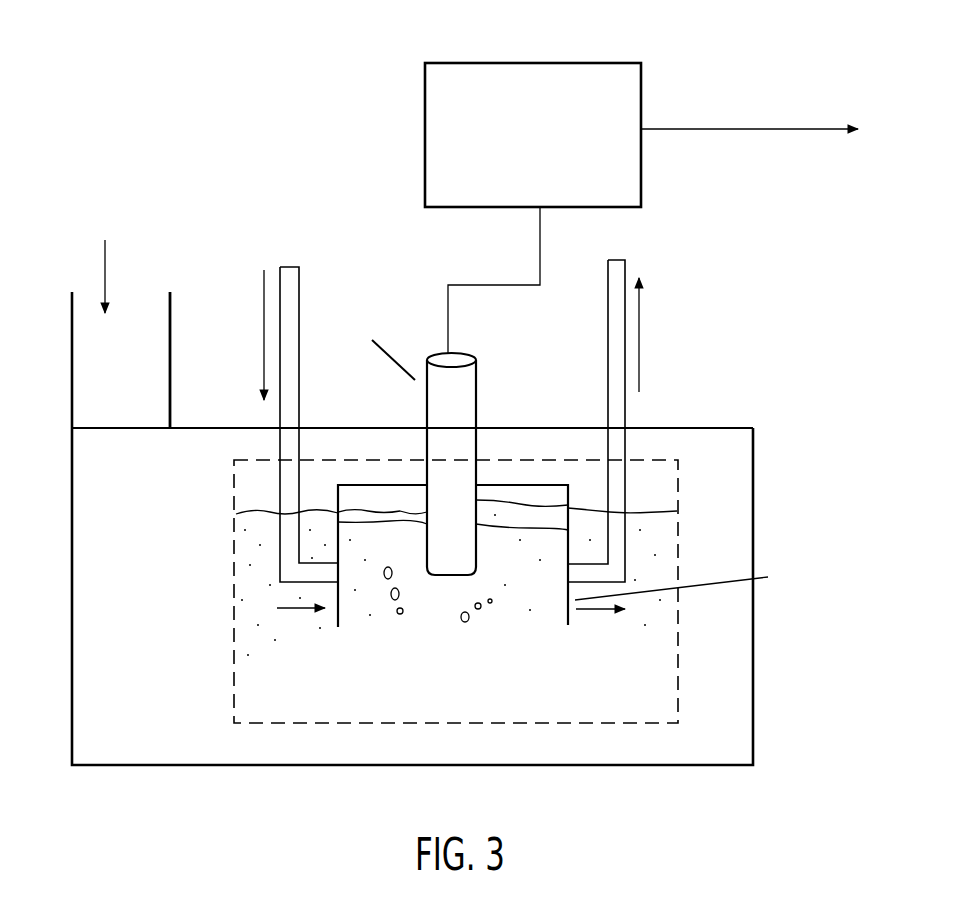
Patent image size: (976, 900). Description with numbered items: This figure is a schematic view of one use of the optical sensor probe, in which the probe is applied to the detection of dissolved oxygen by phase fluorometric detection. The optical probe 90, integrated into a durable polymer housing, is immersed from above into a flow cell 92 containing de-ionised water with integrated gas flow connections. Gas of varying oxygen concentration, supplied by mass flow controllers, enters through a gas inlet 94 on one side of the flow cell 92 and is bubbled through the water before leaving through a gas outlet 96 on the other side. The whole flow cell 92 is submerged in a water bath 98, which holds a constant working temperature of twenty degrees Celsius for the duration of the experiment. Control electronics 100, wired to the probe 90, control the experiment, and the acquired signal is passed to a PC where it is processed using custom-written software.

The control electronics 100 is at (563, 63).
The optical probe 90 is at (375, 257).
The flow cell 92 is at (283, 593).
The gas inlet 94 is at (290, 265).
The gas outlet 96 is at (620, 258).
The water bath 98 is at (120, 603).